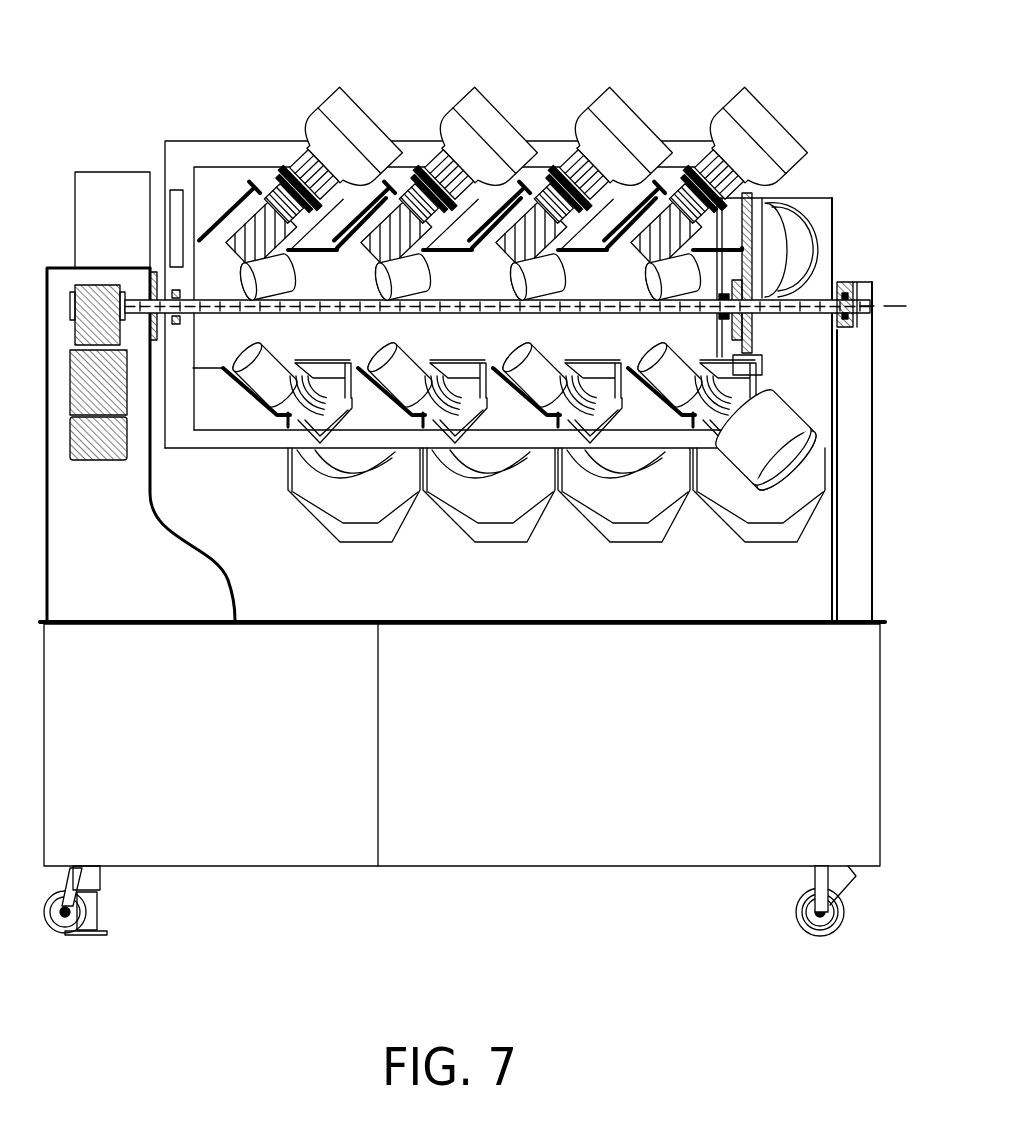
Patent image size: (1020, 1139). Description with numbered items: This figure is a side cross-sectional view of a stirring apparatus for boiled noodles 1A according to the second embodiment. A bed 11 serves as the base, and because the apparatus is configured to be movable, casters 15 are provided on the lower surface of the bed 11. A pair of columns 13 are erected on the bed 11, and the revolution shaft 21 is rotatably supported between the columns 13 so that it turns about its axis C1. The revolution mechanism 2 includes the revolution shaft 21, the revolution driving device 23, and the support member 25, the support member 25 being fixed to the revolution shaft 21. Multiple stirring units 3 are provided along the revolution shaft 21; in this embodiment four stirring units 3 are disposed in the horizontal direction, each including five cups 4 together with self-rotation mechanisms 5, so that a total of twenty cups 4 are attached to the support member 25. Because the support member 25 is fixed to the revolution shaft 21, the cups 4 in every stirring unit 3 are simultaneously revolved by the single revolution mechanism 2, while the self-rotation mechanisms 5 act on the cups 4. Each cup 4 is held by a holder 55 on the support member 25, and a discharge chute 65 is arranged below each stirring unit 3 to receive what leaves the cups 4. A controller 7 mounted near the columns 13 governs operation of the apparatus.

The stirring apparatus for boiled noodles 1A is at (464, 476).
The revolution mechanism 2 is at (846, 281).
The stirring unit 3 is at (551, 314).
The cup 4 is at (320, 103).
The self-rotation mechanism 5 is at (503, 166).
The controller 7 is at (82, 183).
The bed 11 is at (860, 637).
The column 13 is at (65, 520).
The caster 15 is at (793, 902).
The revolution shaft 21 is at (563, 316).
The revolution driving device 23 is at (100, 460).
The support member 25 is at (202, 148).
The holder plate 55 is at (232, 377).
The discharge chute 65 is at (348, 540).
The rotation axis C1 is at (890, 306).